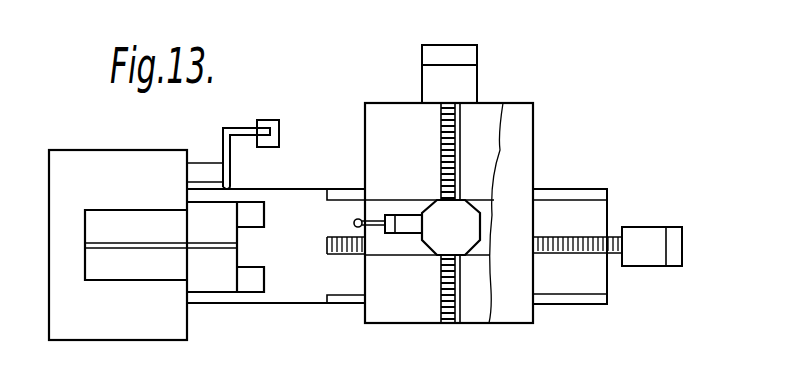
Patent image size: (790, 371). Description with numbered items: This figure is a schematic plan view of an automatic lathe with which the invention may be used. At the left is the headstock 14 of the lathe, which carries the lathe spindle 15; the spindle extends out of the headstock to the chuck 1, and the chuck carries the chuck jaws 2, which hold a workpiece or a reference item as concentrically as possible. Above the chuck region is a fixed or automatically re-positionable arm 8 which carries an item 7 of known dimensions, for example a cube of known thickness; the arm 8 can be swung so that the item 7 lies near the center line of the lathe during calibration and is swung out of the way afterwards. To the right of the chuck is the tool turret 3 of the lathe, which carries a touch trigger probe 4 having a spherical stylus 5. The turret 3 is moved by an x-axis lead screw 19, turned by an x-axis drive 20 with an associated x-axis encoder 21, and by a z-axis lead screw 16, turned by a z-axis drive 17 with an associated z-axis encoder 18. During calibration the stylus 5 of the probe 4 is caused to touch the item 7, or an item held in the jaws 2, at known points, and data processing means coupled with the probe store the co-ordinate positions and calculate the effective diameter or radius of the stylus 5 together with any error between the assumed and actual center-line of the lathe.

The chuck 1 is at (211, 278).
The chuck jaws 2 is at (252, 280).
The tool turret 3 is at (458, 230).
The touch trigger probe 4 is at (392, 234).
The spherical stylus 5 is at (356, 219).
The item of known dimensions 7 is at (272, 124).
The arm 8 is at (222, 162).
The headstock 14 is at (103, 158).
The lathe spindle 15 is at (100, 248).
The z-axis lead screw 16 is at (578, 240).
The z-axis drive 17 is at (640, 255).
The z-axis encoder 18 is at (673, 236).
The x-axis lead screw 19 is at (444, 126).
The x-axis drive 20 is at (467, 82).
The x-axis encoder 21 is at (427, 57).